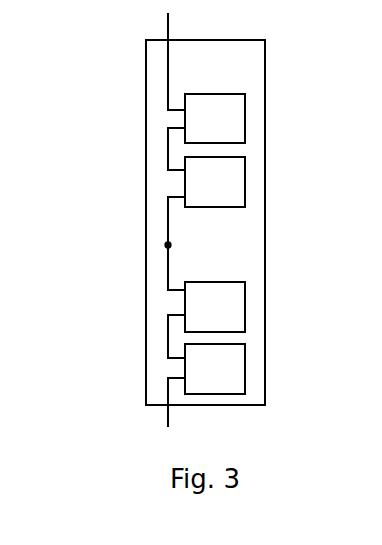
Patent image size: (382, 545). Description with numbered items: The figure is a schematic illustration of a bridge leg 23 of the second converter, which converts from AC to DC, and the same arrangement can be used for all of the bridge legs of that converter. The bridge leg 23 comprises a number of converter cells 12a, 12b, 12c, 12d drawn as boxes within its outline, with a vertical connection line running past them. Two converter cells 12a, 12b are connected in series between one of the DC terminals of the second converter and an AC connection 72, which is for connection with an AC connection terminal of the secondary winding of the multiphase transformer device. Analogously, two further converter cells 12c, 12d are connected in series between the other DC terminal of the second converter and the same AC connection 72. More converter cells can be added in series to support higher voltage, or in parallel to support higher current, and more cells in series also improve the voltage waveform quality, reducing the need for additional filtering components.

The bridge leg 23 is at (192, 71).
The AC connection 72 is at (168, 245).
The converter cell 12a is at (193, 133).
The converter cell 12b is at (193, 197).
The converter cell 12c is at (193, 322).
The converter cell 12d is at (193, 384).